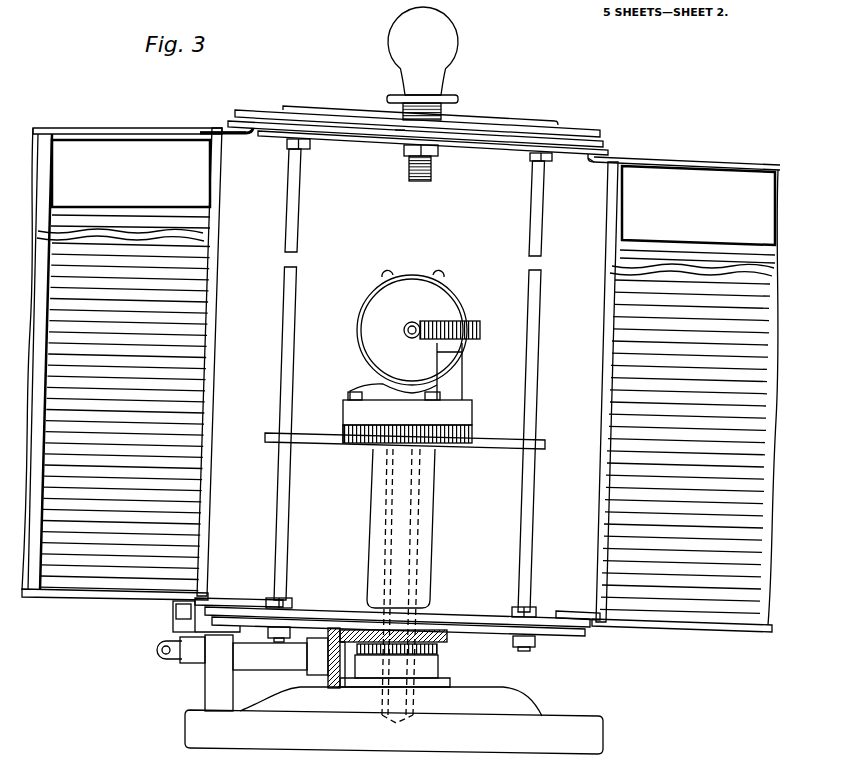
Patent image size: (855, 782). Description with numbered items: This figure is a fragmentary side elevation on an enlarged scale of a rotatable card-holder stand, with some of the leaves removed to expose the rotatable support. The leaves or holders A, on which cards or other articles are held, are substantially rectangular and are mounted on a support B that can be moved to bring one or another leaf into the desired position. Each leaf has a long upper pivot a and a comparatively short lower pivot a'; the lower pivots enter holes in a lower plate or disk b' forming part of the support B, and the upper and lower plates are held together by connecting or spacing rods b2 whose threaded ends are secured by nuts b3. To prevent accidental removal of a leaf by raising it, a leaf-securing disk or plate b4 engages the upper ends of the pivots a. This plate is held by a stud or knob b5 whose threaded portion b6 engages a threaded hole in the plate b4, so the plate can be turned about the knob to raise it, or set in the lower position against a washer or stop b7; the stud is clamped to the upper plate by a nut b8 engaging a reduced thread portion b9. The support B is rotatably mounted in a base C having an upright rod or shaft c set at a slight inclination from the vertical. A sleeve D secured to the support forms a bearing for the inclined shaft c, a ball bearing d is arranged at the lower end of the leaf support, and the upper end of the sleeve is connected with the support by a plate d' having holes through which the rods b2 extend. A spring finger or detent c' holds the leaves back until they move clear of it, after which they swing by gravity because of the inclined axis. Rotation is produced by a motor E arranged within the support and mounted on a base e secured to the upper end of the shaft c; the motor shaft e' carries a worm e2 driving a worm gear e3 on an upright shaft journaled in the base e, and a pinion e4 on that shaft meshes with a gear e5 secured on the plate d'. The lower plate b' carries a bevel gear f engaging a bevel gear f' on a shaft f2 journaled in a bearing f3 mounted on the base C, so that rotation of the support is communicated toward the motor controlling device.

The leaves or holders A is at (213, 325).
The support B is at (404, 117).
The base C is at (394, 732).
The sleeve D is at (432, 580).
The motor E is at (408, 335).
The upper pivots or pintles a is at (397, 135).
The lower pivots or pintles a' is at (397, 596).
The lower plate or disk b' is at (397, 637).
The connecting or spacing rods b2 is at (285, 503).
The nuts b3 is at (535, 158).
The leaf-securing disk or plate b4 is at (582, 126).
The stud or knob b5 is at (443, 48).
The threaded portion b6 is at (455, 113).
The washer or stop b7 is at (400, 131).
The nut b8 is at (433, 149).
The reduced thread portion b9 is at (415, 182).
The upright rod or shaft c is at (430, 586).
The spring finger or detent c' is at (191, 616).
The ball bearing d is at (411, 665).
The plate d' is at (418, 435).
The motor base e is at (421, 410).
The motor shaft e' is at (398, 346).
The worm e2 is at (407, 325).
The worm gear e3 is at (482, 331).
The pinion e4 is at (455, 444).
The gear e5 is at (343, 432).
The bevel gear f is at (387, 632).
The bevel gear f' is at (391, 702).
The shaft f2 is at (307, 658).
The bearing f3 is at (195, 673).